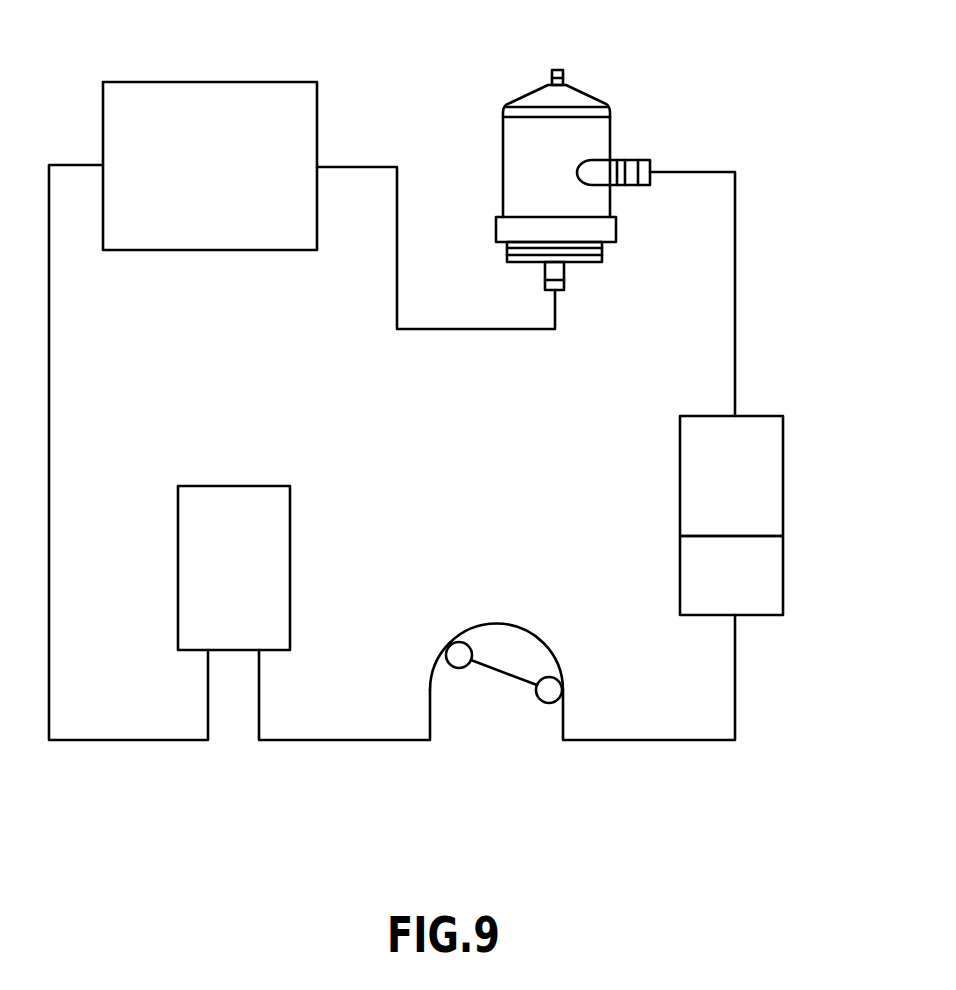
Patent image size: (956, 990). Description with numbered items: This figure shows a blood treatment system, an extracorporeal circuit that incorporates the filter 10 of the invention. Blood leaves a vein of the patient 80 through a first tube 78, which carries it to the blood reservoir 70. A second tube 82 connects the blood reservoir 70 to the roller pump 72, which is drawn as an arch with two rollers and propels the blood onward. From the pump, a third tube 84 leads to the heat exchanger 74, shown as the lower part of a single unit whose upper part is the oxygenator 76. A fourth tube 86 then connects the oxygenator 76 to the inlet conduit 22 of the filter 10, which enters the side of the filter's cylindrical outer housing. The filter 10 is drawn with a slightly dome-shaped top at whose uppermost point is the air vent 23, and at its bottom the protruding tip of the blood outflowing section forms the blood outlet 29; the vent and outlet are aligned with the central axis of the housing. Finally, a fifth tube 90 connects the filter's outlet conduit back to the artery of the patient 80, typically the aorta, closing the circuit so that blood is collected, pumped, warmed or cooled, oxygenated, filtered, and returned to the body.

The filter 10 is at (592, 88).
The inlet conduit 22 is at (637, 157).
The air vent 23 is at (557, 69).
The blood outlet 29 is at (572, 270).
The blood reservoir 70 is at (246, 502).
The roller pump 72 is at (497, 625).
The heat exchanger 74 is at (764, 576).
The oxygenator 76 is at (768, 476).
The first tube 78 is at (49, 378).
The patient 80 is at (228, 120).
The second tube 82 is at (342, 740).
The third tube 84 is at (652, 740).
The fourth tube 86 is at (735, 272).
The fifth tube 90 is at (452, 329).